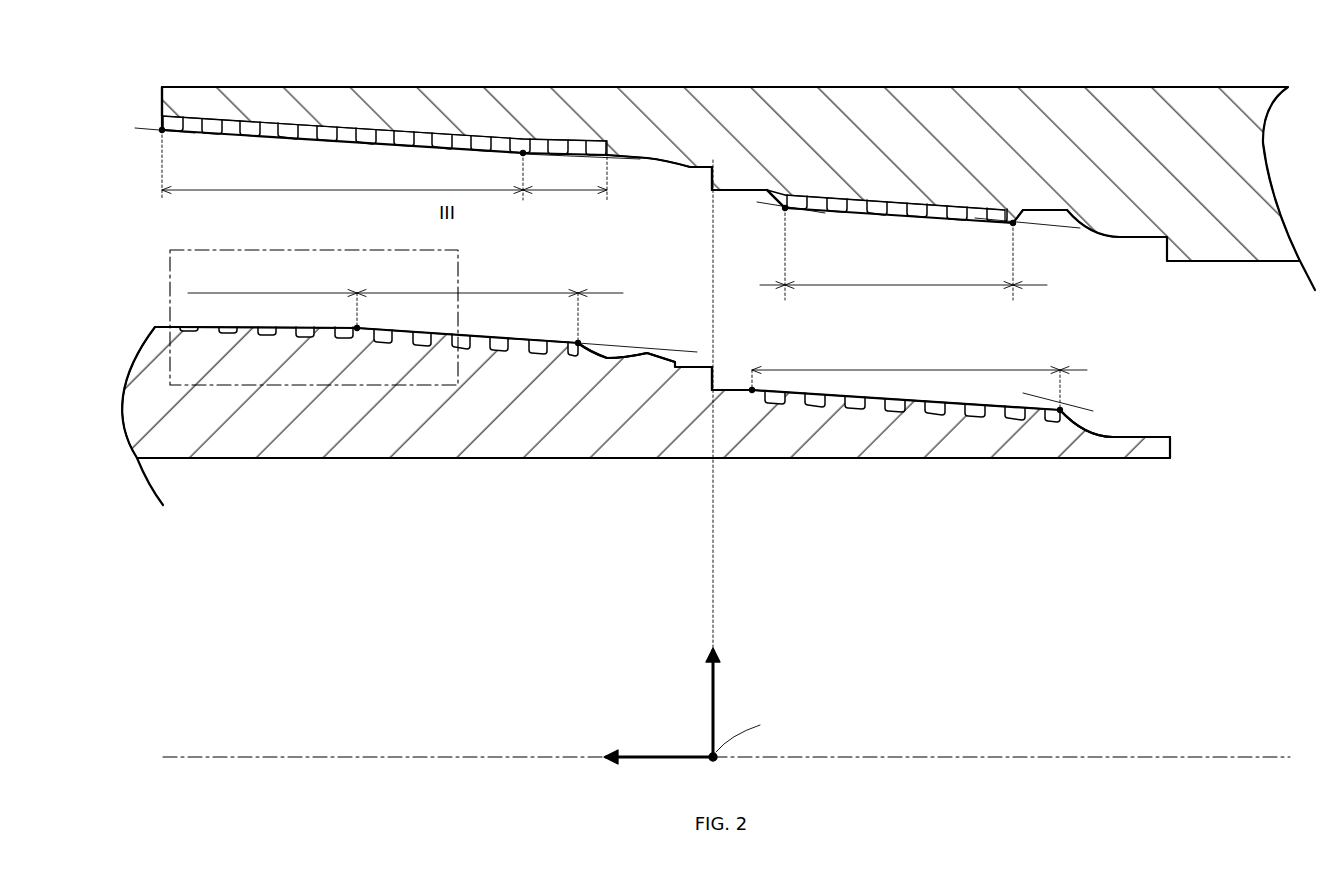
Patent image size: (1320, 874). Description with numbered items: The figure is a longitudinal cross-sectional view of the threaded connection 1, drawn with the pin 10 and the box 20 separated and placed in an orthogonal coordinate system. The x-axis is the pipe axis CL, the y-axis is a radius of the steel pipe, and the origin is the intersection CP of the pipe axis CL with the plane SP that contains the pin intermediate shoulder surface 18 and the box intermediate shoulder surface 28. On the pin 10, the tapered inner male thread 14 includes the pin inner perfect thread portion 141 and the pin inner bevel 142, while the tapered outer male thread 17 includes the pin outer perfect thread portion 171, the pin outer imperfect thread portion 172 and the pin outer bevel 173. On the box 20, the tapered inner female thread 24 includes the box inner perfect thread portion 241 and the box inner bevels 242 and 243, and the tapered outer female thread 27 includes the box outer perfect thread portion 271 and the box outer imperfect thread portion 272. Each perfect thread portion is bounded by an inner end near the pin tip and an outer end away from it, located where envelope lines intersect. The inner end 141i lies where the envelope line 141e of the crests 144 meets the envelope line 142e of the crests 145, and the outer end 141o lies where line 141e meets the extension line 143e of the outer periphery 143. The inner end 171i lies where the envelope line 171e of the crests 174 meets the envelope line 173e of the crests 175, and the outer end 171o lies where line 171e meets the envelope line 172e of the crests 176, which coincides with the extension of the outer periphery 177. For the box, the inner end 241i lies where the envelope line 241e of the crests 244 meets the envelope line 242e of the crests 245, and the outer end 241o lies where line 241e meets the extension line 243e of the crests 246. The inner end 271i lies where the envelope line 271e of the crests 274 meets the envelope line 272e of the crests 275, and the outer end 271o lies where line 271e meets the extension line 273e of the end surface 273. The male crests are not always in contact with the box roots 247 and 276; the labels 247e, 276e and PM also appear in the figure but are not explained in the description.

The threaded connection for steel pipe 1 is at (822, 801).
The pin 10 is at (240, 468).
The tapered inner male thread 14 is at (920, 416).
The tapered outer male thread 17 is at (405, 347).
The pin intermediate shoulder surface 18 is at (712, 375).
The box 20 is at (1207, 72).
The tapered inner female thread 24 is at (900, 208).
The tapered outer female thread 27 is at (430, 128).
The box intermediate shoulder surface 28 is at (712, 180).
The pin inner perfect thread portion 141 is at (930, 369).
The envelope line of the crests of the pin inner perfect thread portion 141e is at (978, 399).
The outer end of the pin inner perfect thread portion 141o is at (752, 392).
The inner end of the pin inner perfect thread portion 141i is at (1060, 412).
The pin inner bevel 142 is at (1070, 369).
The envelope line of the crests of the pin inner bevel 142e is at (1060, 396).
The outer periphery of the pin 143 is at (727, 389).
The extension line of the outer periphery of the pin 143e is at (790, 389).
The crests of the pin inner perfect thread portion 144 is at (875, 399).
The crests of the pin inner bevel 145 is at (1095, 432).
The pin outer perfect thread portion 171 is at (488, 292).
The envelope line of the crests of the pin outer perfect thread portion 171e is at (500, 334).
The outer end of the pin outer perfect thread portion 171o is at (357, 330).
The inner end of the pin outer perfect thread portion 171i is at (578, 345).
The pin outer imperfect thread portion 172 is at (265, 292).
The envelope line of the crests of the pin outer imperfect thread portion 172e is at (265, 324).
The pin outer bevel 173 is at (600, 293).
The envelope line of the crests of the pin outer bevel 173e is at (580, 342).
The crests of the pin outer perfect thread portion 174 is at (470, 344).
The crests of the pin outer bevel 175 is at (610, 356).
The crests of the pin outer imperfect thread portion 176 is at (295, 327).
The outer periphery of the pin 177 is at (162, 326).
The box inner perfect thread portion 241 is at (878, 290).
The envelope line of the crests of the box inner perfect thread portion 241e is at (915, 225).
The outer end of the box inner perfect thread portion 241o is at (785, 208).
The inner end of the box inner perfect thread portion 241i is at (1013, 223).
The box inner bevel 242 is at (1030, 290).
The envelope line of the crests of the box inner bevel 242e is at (1013, 228).
The box inner bevel 243 is at (767, 292).
The extension line of the crests of the box inner bevel 243e is at (787, 215).
The crests of the box inner perfect thread portion 244 is at (890, 225).
The crests of the box inner bevel 245 is at (1035, 230).
The crests of the box inner bevel 246 is at (770, 198).
The roots of the inner female thread 247 is at (965, 224).
The tangent line 247e is at (823, 218).
The box outer perfect thread portion 271 is at (330, 190).
The envelope line of the crests of the box outer perfect thread portion 271e is at (440, 152).
The outer end of the box outer perfect thread portion 271o is at (162, 130).
The inner end of the box outer perfect thread portion 271i is at (523, 153).
The box outer imperfect thread portion 272 is at (580, 190).
The envelope line of the crests of the box outer imperfect thread portion 272e is at (607, 158).
The end surface of the box 273 is at (160, 98).
The extension line of the end surface of the box 273e is at (160, 122).
The crests of the box outer perfect thread portion 274 is at (300, 140).
The crests of the box outer imperfect thread portion 275 is at (523, 155).
The roots of the outer female thread 276 is at (238, 131).
The tangent line 276e is at (372, 146).
The plane containing the intermediate shoulder surfaces SP is at (713, 570).
The pipe axis CL is at (1120, 762).
The intersection of plane SP and pipe axis CL CP is at (710, 752).
The parting surface PM is at (143, 408).